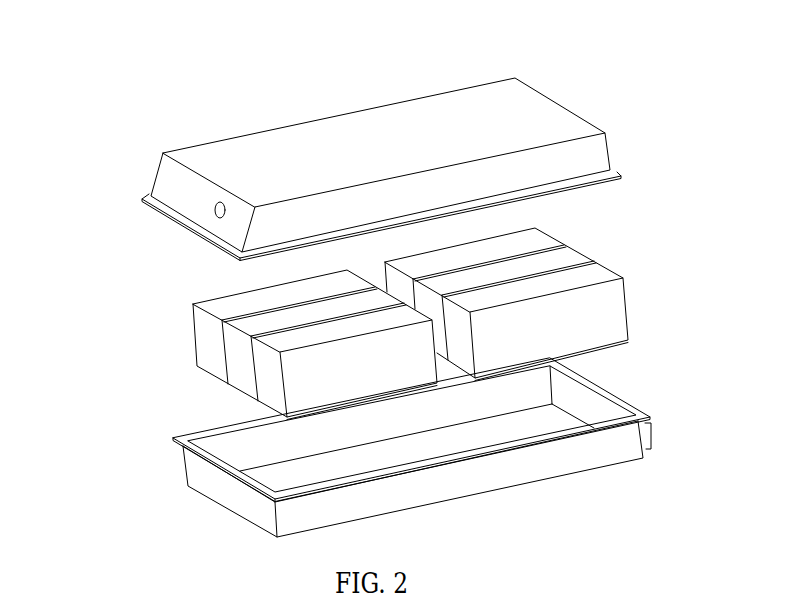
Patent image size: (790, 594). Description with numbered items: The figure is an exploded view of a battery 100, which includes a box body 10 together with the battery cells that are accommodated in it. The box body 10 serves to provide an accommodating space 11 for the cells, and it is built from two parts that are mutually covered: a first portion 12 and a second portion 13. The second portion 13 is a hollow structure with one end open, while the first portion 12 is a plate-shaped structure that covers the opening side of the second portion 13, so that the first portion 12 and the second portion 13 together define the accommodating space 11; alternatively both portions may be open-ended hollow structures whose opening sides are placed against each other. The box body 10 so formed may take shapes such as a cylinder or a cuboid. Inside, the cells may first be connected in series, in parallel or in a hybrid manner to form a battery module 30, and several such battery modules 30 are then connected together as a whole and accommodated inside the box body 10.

The battery 100 is at (381, 50).
The box body 10 is at (93, 316).
The accommodating space 11 is at (572, 404).
The first portion 12 is at (187, 467).
The second portion 13 is at (198, 204).
The battery module 30 is at (603, 308).